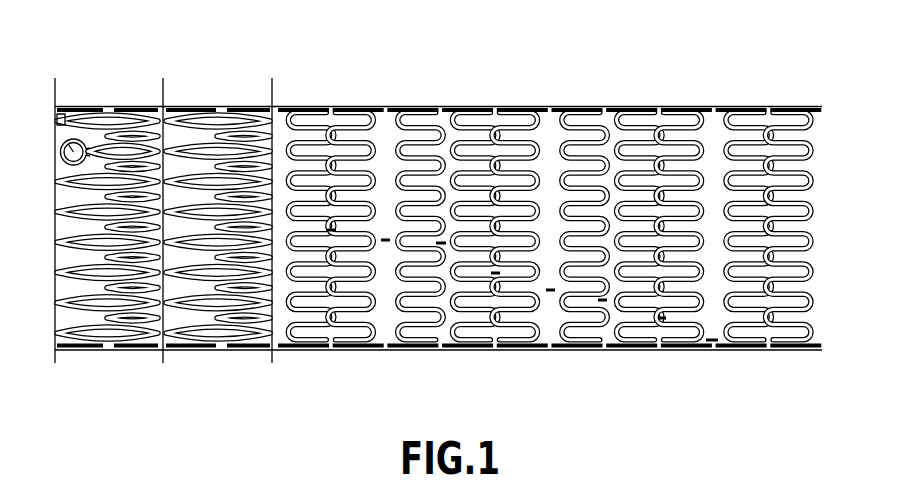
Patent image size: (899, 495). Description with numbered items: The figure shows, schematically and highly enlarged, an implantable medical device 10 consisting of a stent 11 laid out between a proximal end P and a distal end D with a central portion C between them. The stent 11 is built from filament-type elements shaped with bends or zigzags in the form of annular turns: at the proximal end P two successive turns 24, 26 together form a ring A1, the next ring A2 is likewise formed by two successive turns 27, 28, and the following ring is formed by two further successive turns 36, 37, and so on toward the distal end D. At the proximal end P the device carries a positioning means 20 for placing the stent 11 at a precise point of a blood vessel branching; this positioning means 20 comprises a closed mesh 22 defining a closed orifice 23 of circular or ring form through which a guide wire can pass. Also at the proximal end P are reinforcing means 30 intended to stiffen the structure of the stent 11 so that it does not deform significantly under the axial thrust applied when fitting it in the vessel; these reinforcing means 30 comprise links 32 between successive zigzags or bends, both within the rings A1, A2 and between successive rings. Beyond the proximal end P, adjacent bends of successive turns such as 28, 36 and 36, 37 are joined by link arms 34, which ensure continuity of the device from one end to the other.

The implantable medical device 10 is at (623, 100).
The stent 11 is at (738, 105).
The positioning means 20 is at (56, 111).
The closed mesh 22 is at (62, 153).
The closed orifice 23 is at (56, 133).
The turn of filament element 24 is at (64, 108).
The turn of filament element 26 is at (137, 108).
The turn of filament element 27 is at (178, 108).
The turn of filament element 28 is at (250, 108).
The reinforcing means 30 is at (100, 247).
The link 32 is at (105, 279).
The link arm 34 is at (323, 230).
The turn of filament element 36 is at (287, 108).
The turn of filament element 37 is at (357, 108).
The proximal end P is at (53, 101).
The distal end D is at (828, 101).
The central portion C is at (441, 100).
The ring A1 is at (81, 191).
The ring A2 is at (219, 191).